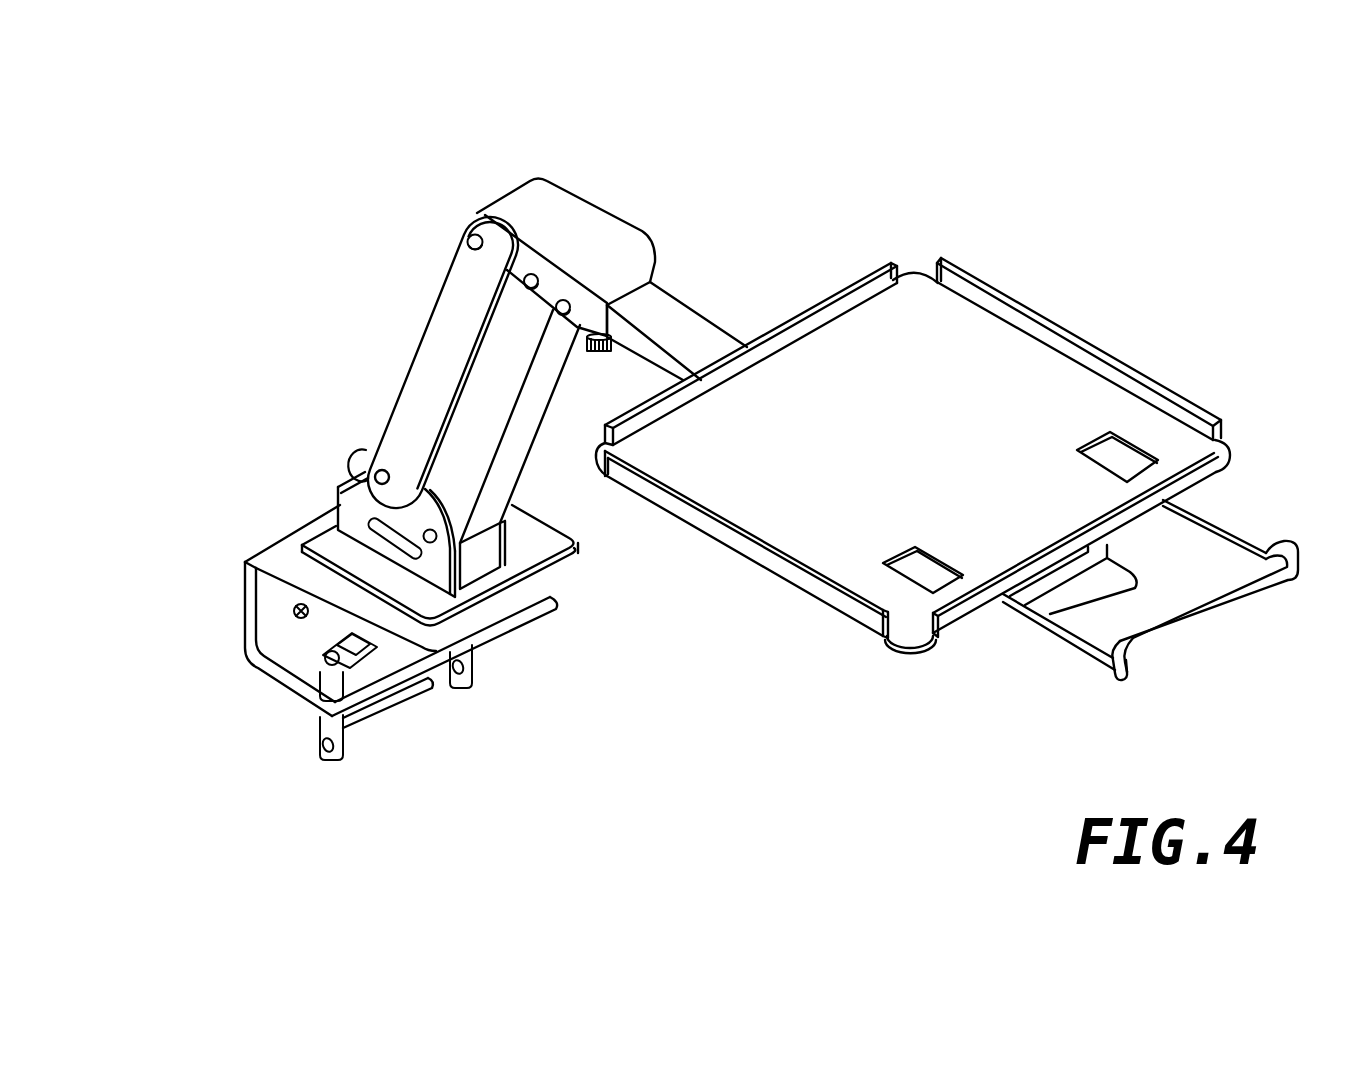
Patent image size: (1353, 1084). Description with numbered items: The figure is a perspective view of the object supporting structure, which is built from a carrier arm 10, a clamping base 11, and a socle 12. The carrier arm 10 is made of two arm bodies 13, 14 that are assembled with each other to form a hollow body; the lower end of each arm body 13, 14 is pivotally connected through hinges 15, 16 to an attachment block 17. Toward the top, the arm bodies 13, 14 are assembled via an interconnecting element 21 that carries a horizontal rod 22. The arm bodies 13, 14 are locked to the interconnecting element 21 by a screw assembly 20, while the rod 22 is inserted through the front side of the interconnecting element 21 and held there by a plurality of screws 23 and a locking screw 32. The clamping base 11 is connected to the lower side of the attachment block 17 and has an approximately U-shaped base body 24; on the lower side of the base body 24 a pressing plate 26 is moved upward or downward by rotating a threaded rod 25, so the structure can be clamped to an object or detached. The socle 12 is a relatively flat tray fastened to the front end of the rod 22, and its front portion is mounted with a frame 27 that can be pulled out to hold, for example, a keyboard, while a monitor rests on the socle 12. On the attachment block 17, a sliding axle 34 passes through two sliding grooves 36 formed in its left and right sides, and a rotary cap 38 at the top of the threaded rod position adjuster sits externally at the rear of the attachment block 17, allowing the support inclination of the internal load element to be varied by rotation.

The carrier arm 10 is at (361, 357).
The clamping base 11 is at (227, 606).
The socle 12 is at (955, 310).
The arm body 13 is at (438, 322).
The arm body 14 is at (512, 468).
The hinge 15 is at (372, 480).
The hinge 16 is at (395, 548).
The attachment block 17 is at (338, 505).
The screw assembly 20 is at (522, 283).
The interconnecting element 21 is at (558, 203).
The horizontal rod 22 is at (702, 327).
The screws 23 is at (555, 307).
The base body 24 is at (248, 660).
The threaded rod 25 is at (322, 757).
The pressing plate 26 is at (292, 667).
The frame 27 is at (1183, 607).
The locking screw 32 is at (598, 352).
The sliding axle 34 is at (373, 525).
The sliding grooves 36 is at (423, 538).
The rotary cap 38 is at (353, 452).